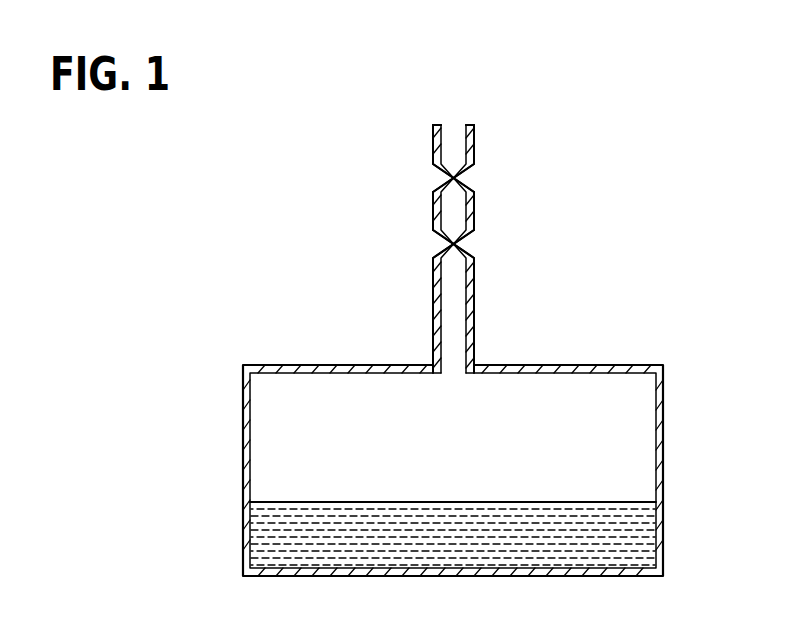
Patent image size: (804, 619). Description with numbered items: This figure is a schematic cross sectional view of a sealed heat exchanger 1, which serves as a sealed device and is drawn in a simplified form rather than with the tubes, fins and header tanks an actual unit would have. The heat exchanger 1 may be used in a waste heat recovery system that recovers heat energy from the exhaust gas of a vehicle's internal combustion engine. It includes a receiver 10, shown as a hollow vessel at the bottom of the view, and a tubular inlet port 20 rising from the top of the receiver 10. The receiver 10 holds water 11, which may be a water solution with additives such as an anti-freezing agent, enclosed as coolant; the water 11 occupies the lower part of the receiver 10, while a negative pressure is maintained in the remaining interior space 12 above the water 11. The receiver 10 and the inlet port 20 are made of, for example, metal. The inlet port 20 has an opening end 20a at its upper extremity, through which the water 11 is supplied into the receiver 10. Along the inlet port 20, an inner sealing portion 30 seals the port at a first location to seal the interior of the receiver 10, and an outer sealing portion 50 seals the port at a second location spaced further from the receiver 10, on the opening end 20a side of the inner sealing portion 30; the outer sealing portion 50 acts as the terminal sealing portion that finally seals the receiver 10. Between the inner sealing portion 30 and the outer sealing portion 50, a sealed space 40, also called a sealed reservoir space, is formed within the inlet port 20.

The heat exchanger 1 is at (669, 262).
The receiver 10 is at (659, 435).
The water 11 is at (626, 539).
The remaining interior space 12 is at (633, 468).
The tubular inlet port 20 is at (490, 129).
The opening end 20a is at (455, 125).
The inner sealing portion 30 is at (462, 247).
The sealed space 40 is at (452, 212).
The outer sealing portion 50 is at (462, 178).